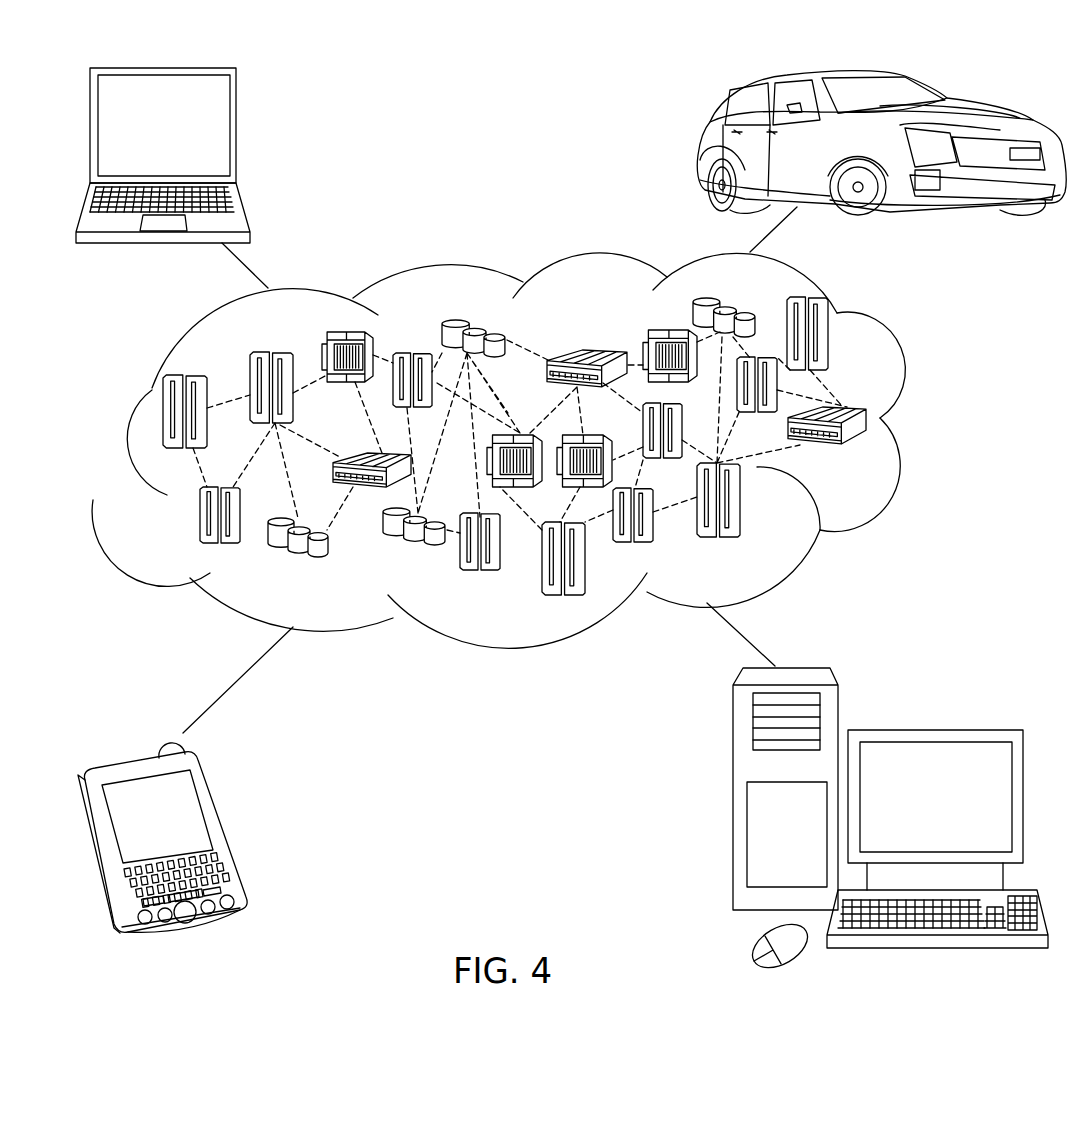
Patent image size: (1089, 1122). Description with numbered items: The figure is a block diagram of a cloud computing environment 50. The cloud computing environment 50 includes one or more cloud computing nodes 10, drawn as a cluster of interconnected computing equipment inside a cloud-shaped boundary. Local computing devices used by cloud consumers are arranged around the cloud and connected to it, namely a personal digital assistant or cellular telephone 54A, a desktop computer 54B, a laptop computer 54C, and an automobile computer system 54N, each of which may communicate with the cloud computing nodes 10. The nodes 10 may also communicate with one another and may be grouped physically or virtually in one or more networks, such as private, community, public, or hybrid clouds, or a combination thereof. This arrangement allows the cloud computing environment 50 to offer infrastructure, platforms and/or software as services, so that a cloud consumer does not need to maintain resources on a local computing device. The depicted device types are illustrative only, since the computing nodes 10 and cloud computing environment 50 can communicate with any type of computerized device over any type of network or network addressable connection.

The personal digital assistant or cellular telephone 54A is at (223, 829).
The desktop computer 54B is at (932, 730).
The laptop computer 54C is at (237, 133).
The automobile computer system 54N is at (698, 151).
The cloud computing environment 50 is at (935, 422).
The cloud computing node 10 is at (872, 455).